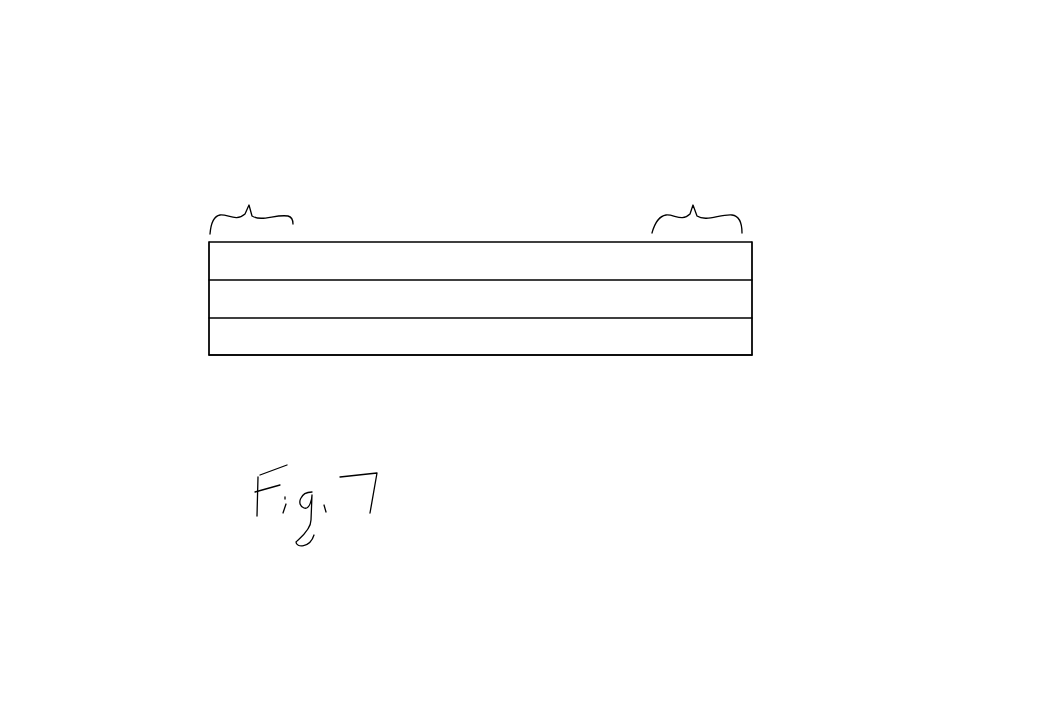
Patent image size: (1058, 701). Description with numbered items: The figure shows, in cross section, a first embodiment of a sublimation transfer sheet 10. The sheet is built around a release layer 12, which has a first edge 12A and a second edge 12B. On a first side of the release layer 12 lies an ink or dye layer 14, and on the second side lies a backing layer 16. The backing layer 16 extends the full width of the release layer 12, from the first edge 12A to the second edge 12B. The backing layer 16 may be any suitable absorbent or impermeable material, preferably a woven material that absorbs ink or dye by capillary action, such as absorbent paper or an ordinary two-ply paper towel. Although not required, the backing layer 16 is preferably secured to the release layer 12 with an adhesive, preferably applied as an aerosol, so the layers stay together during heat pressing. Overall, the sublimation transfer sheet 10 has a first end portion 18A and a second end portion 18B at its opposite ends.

The sublimation transfer sheet 10 is at (350, 30).
The release layer 12 is at (420, 300).
The first edge 12A is at (209, 305).
The second edge 12B is at (850, 255).
The ink or dye layer 14 is at (510, 432).
The backing layer 16 is at (487, 260).
The first end portion 18A is at (251, 189).
The second end portion 18B is at (697, 191).